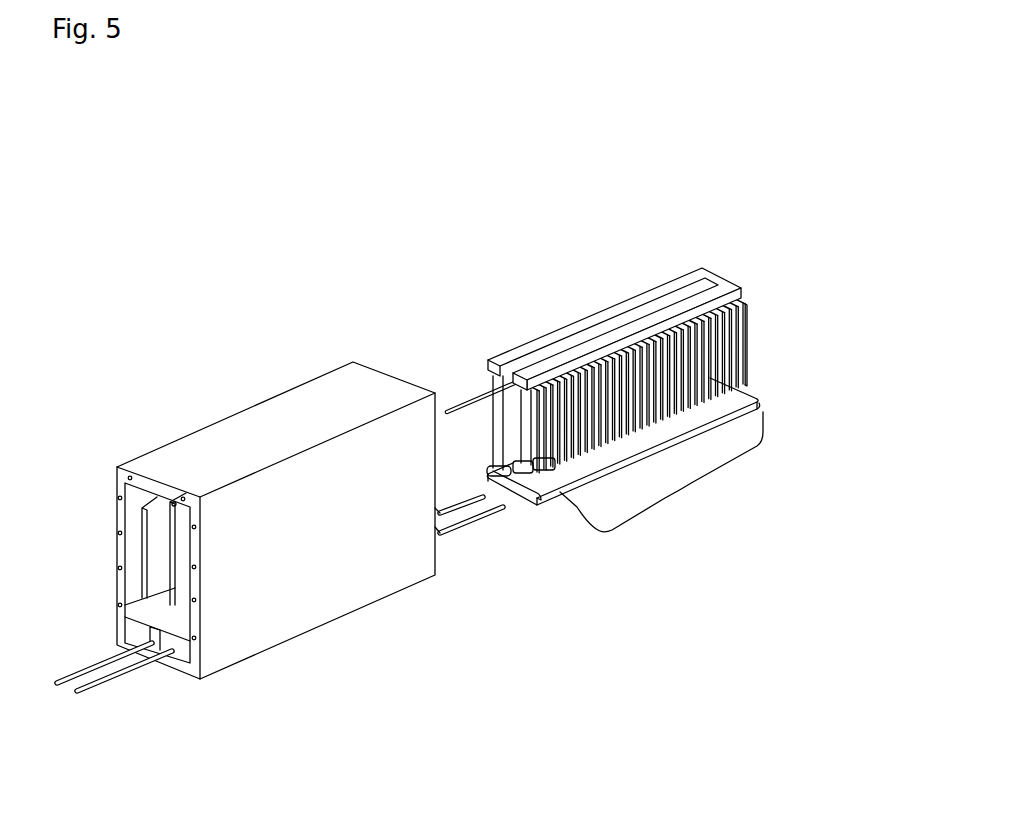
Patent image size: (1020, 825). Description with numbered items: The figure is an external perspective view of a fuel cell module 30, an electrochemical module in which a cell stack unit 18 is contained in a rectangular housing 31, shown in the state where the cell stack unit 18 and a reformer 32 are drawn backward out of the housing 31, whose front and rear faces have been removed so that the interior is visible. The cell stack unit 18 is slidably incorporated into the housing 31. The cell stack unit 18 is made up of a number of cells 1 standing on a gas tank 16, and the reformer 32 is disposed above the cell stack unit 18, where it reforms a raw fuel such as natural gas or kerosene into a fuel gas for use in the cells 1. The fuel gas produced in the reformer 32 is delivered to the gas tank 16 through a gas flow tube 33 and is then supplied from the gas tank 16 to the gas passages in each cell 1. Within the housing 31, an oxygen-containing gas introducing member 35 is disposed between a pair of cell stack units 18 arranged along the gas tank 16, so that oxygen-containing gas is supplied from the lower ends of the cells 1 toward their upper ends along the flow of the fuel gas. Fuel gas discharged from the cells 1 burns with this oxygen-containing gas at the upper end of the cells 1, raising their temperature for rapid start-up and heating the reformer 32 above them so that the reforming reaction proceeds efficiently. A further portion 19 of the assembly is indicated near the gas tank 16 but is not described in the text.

The cell 1 is at (750, 304).
The gas tank 16 is at (560, 492).
The cell stack unit 18 is at (745, 346).
The housing portion 19 is at (693, 483).
The fuel cell module 30 is at (222, 226).
The housing 31 is at (280, 412).
The reformer 32 is at (500, 358).
The gas flow tube 33 is at (488, 380).
The oxygen-containing gas introducing member 35 is at (183, 535).